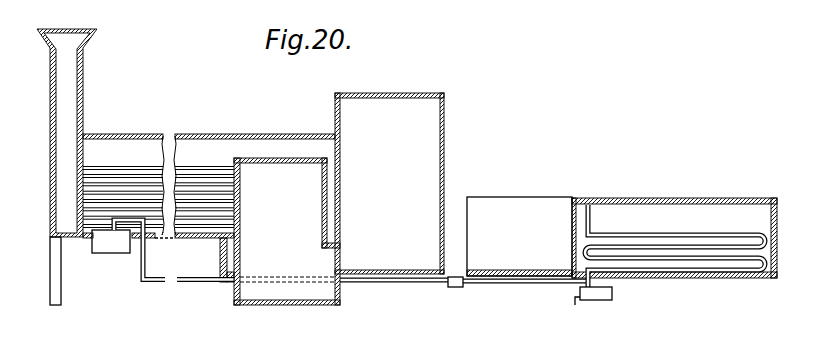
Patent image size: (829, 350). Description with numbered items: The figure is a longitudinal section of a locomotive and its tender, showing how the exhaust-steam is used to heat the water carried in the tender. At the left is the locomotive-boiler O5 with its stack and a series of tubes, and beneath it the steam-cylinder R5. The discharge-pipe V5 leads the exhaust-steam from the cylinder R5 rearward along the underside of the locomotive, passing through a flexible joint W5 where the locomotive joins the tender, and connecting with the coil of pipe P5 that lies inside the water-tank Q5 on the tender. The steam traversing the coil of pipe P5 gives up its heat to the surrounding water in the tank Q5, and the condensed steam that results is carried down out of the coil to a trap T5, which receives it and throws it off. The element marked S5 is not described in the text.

The hopper S5 is at (67, 157).
The locomotive-boiler O5 is at (113, 190).
The steam-cylinder R5 is at (111, 241).
The discharge-pipe V5 is at (351, 260).
The flexible joint W5 is at (457, 290).
The trap T5 is at (593, 306).
The water-tank Q5 is at (674, 227).
The coil of pipe P5 is at (675, 246).